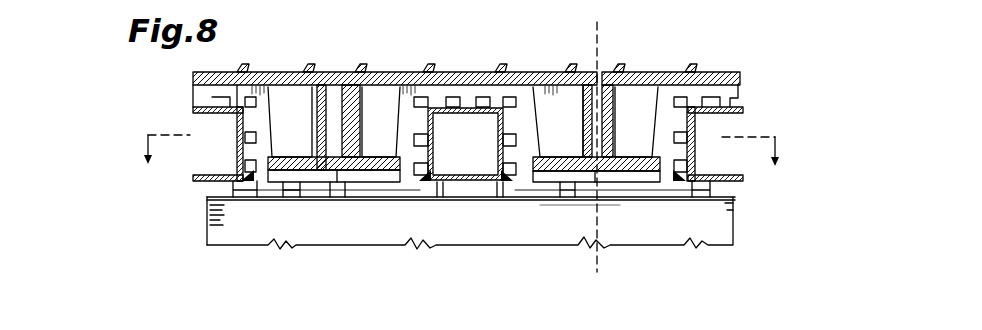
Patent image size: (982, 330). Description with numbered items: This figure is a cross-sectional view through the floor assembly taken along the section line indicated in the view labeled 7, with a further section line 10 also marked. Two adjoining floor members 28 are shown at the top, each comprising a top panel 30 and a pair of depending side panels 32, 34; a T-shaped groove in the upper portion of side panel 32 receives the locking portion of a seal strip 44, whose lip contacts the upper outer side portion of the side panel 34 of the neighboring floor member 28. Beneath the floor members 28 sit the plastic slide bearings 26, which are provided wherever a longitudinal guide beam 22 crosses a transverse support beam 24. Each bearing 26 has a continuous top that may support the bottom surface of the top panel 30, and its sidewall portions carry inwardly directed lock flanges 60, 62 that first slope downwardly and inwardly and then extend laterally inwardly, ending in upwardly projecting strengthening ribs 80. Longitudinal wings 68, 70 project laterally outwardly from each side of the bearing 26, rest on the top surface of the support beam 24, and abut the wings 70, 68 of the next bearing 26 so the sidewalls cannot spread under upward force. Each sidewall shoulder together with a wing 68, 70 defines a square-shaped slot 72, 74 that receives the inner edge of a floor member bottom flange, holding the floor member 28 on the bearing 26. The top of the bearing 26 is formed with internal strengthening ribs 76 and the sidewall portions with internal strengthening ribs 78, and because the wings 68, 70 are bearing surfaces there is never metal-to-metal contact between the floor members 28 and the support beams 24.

The section line 7- 7 is at (596, 24).
The section line 10- 10 is at (457, 166).
The guide beam 22 is at (230, 192).
The transverse support beam 24 is at (378, 229).
The plastic slide bearing 26 is at (186, 93).
The floor member 28 is at (285, 73).
The top panel 30 is at (241, 71).
The side panel 32 is at (326, 134).
The side panel 34 is at (370, 87).
The seal strip 44 is at (325, 92).
The lock flange 60 is at (262, 196).
The lock flange 62 is at (425, 197).
The longitudinal wing 68 is at (352, 198).
The longitudinal wing 70 is at (322, 200).
The slot 72 is at (401, 200).
The slot 74 is at (580, 219).
The internal strengthening rib 76 is at (440, 112).
The internal strengthening rib 78 is at (437, 150).
The strengthening rib 80 is at (503, 197).